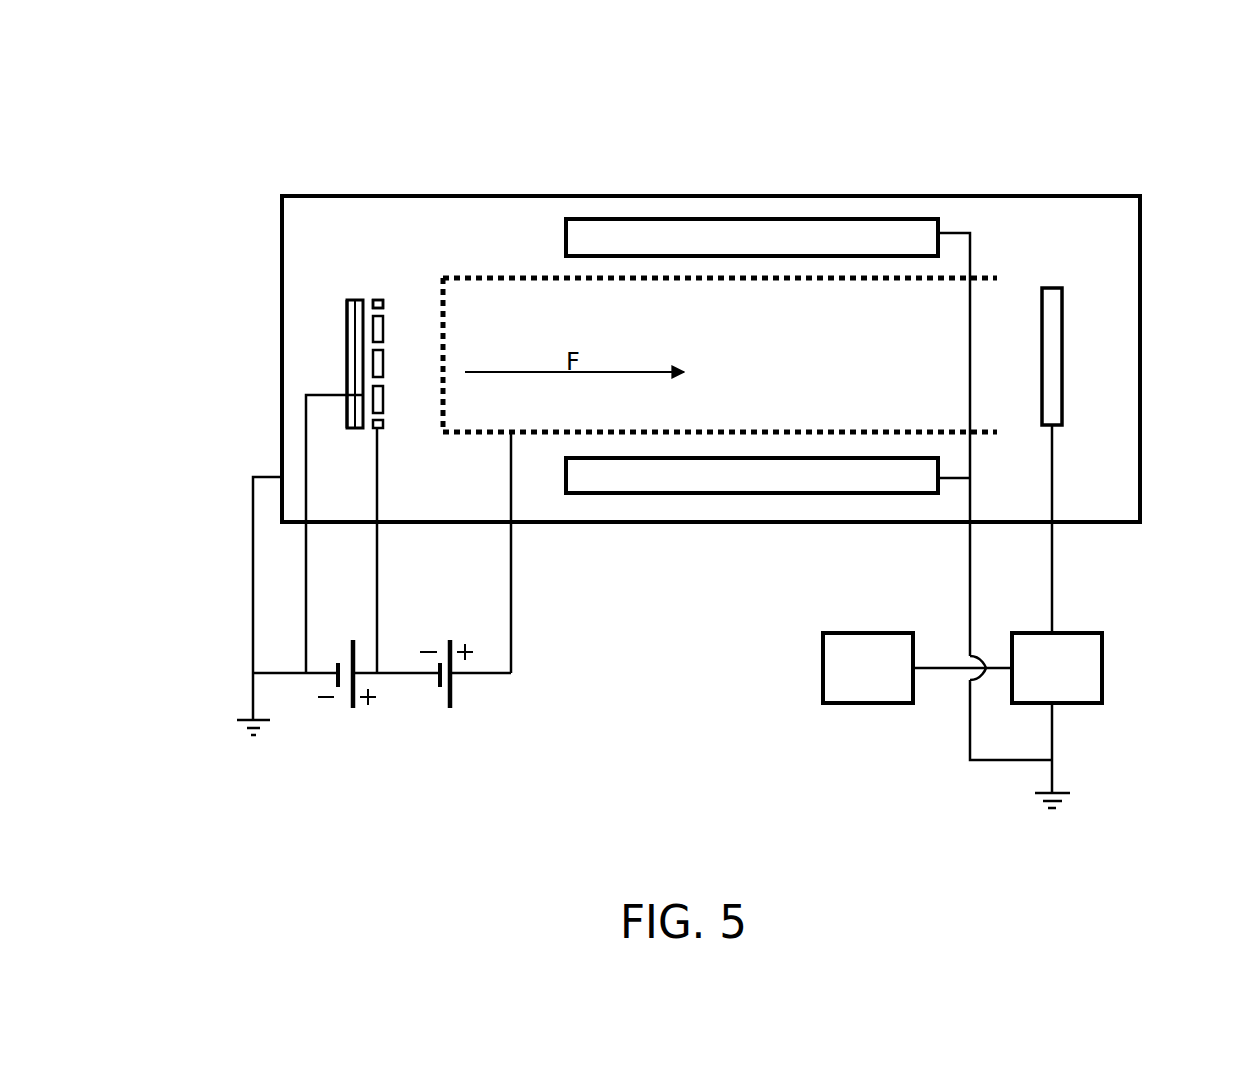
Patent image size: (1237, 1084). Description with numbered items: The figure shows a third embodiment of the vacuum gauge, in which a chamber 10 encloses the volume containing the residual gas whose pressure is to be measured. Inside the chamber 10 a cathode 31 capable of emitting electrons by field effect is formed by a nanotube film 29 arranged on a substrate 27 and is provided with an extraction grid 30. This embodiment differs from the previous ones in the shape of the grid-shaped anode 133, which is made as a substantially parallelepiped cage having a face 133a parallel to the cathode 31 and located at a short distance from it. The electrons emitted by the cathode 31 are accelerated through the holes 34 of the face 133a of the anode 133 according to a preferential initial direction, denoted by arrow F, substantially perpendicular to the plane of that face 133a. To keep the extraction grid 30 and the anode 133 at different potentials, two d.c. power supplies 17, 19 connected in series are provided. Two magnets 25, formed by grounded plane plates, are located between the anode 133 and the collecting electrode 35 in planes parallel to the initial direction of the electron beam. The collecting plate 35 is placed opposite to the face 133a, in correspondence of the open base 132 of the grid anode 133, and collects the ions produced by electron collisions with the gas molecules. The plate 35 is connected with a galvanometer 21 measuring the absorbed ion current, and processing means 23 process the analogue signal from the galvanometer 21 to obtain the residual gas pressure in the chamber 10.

The chamber 10 is at (924, 198).
The d.c. power supply 17 is at (355, 730).
The d.c. power supply 19 is at (468, 698).
The galvanometer 21 is at (1074, 681).
The processing means 23 is at (885, 681).
The magnets 25 is at (752, 218).
The substrate 27 is at (347, 347).
The nanotube film 29 is at (375, 297).
The extraction grid 30 is at (384, 333).
The cathode 31 is at (346, 282).
The holes 34 is at (443, 400).
The collecting electrode 35 is at (1062, 338).
The open base 132 is at (1003, 366).
The grid-shaped anode 133 is at (692, 326).
The face 133a is at (462, 342).